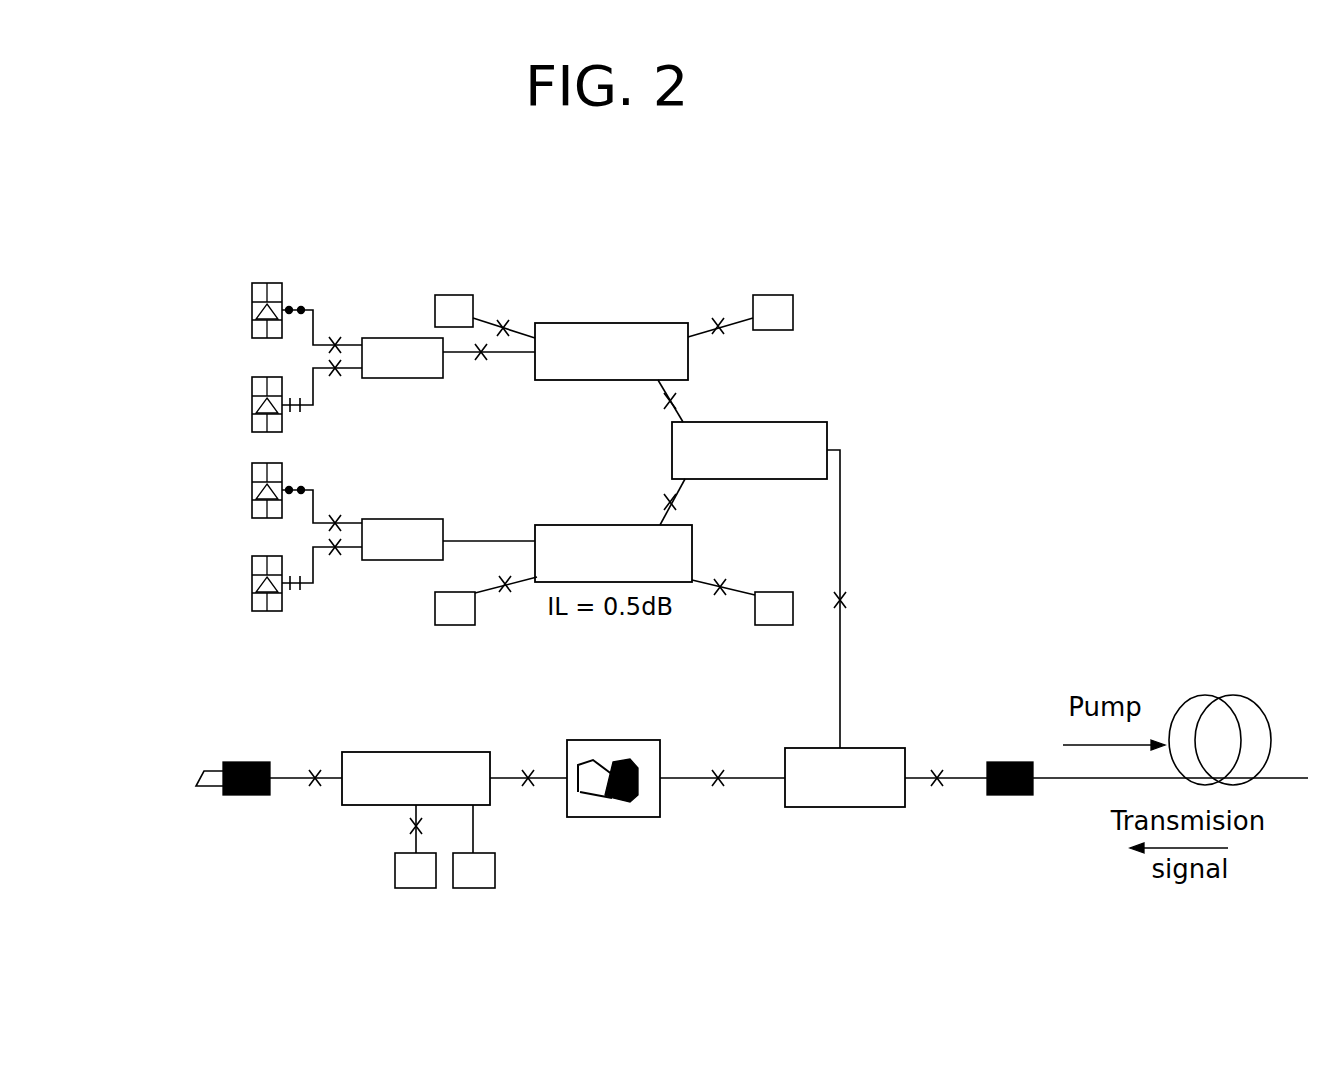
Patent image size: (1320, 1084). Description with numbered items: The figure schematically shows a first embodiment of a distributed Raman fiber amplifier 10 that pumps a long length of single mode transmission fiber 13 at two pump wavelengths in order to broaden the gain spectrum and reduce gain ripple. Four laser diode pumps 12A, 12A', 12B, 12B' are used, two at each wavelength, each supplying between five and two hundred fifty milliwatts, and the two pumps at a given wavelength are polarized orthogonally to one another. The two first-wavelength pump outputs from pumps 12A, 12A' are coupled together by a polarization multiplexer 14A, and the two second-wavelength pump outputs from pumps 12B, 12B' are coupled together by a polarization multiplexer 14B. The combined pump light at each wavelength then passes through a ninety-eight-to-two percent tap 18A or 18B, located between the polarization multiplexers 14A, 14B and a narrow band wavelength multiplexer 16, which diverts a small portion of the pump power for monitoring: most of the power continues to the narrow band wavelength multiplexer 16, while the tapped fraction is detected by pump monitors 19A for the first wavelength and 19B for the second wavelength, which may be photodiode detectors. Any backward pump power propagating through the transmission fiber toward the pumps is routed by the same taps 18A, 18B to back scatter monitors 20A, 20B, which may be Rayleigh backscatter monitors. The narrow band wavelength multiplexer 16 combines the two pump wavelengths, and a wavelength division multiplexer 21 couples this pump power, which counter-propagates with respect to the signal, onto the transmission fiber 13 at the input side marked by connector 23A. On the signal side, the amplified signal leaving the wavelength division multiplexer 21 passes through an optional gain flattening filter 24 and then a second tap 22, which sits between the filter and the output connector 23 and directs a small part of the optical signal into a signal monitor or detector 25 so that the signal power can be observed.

The distributed Raman fiber amplifier 10 is at (712, 212).
The laser diode pump 12A is at (238, 318).
The laser diode pump 12A' is at (241, 412).
The laser diode pump 12B is at (241, 511).
The laser diode pump 12B' is at (246, 591).
The transmission fiber 13 is at (1200, 695).
The polarization multiplexer 14A is at (393, 378).
The polarization multiplexer 14B is at (403, 561).
The narrow band wavelength multiplexer 16 is at (808, 422).
The 98/2% tap 18A is at (582, 380).
The 98/2% tap 18B is at (600, 525).
The pump monitor 19A is at (777, 295).
The pump monitor 19B is at (772, 592).
The back scatter monitor 20A is at (457, 295).
The back scatter monitor 20B is at (455, 625).
The wavelength division multiplexer 21 is at (865, 748).
The second tap 22 is at (415, 752).
The output connector 23 is at (247, 762).
The input connector 23A is at (1010, 762).
The gain flattening filter 24 is at (637, 740).
The signal monitor 25 is at (420, 888).